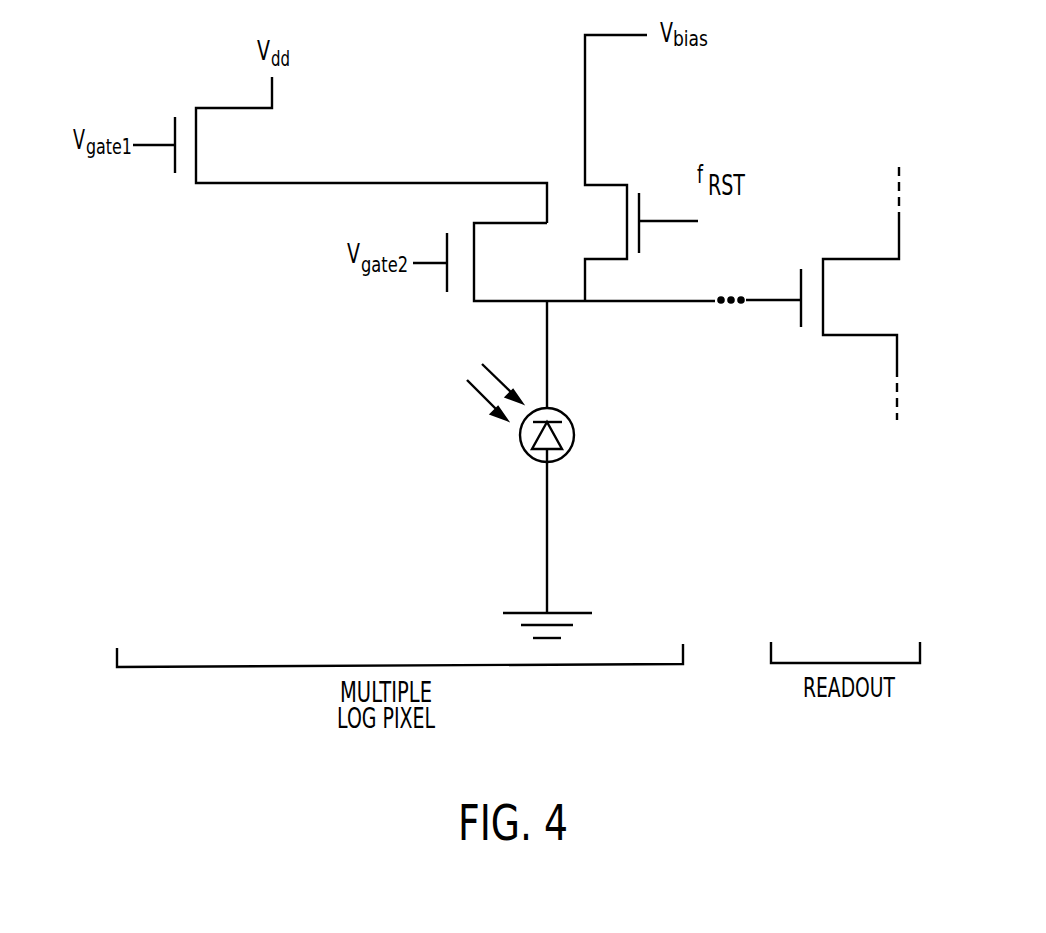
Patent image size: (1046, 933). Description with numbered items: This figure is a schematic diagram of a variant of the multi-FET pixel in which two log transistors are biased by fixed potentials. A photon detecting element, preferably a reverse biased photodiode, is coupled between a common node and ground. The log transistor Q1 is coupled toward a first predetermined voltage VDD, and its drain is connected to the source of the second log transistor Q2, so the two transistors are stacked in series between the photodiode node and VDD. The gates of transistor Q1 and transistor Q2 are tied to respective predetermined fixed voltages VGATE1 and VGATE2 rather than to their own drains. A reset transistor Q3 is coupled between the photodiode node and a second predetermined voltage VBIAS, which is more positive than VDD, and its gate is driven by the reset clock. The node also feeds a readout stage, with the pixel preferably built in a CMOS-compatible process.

The log transistor Q1 is at (340, 150).
The second log transistor Q2 is at (564, 262).
The reset transistor Q3 is at (637, 168).